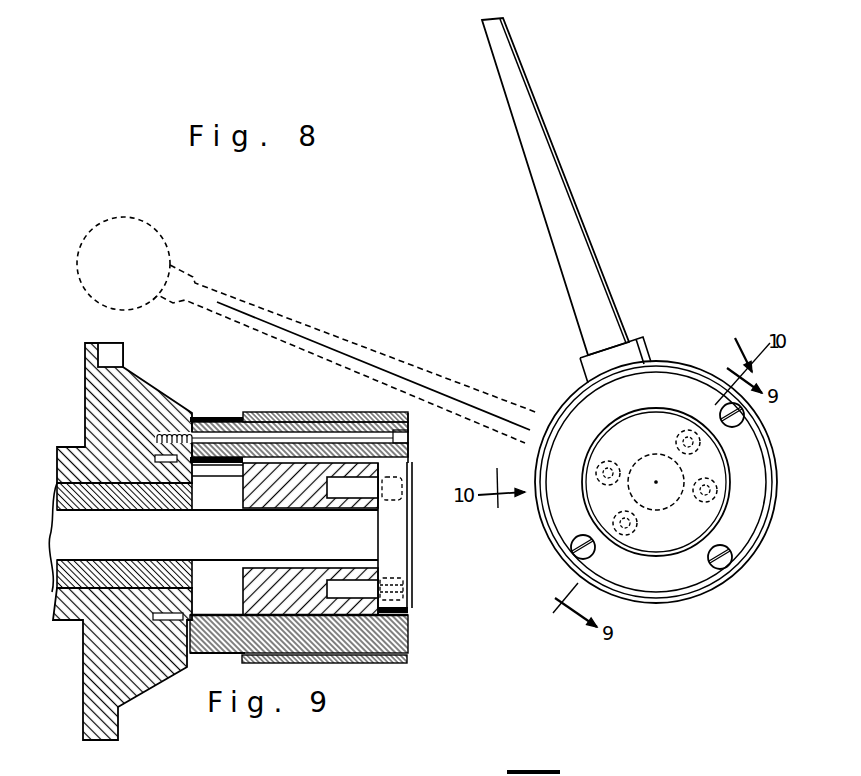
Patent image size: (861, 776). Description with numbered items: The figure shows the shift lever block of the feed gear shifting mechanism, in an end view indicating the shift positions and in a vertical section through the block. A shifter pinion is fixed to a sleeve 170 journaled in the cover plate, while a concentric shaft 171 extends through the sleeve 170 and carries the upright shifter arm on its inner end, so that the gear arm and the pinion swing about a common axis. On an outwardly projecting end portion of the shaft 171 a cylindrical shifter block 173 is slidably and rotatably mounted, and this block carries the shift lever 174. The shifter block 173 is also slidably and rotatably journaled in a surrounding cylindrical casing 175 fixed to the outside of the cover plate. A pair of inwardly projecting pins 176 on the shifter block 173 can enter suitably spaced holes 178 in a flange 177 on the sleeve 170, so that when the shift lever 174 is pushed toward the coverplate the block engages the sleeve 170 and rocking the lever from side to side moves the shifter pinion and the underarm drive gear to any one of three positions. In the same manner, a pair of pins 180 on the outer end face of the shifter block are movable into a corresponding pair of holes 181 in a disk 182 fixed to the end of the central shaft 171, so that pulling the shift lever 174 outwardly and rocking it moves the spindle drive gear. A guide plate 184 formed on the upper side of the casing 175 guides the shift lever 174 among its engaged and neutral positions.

In FIG. 9, the sleeve 170 is at (93, 506).
In FIG. 9, the shaft 171 is at (226, 520).
In FIG. 9, the shifter block 173 is at (248, 584).
In FIG. 8, the shift lever 174 is at (573, 216).
In FIG. 9, the casing 175 is at (318, 425).
In FIG. 8, the casing 175 is at (692, 580).
In FIG. 8, the pins 176 is at (598, 469).
In FIG. 9, the flange 177 is at (183, 484).
In FIG. 8, the holes 178 is at (600, 478).
In FIG. 9, the pins 180 is at (353, 493).
In FIG. 8, the pins 180 is at (685, 441).
In FIG. 9, the holes 181 is at (402, 481).
In FIG. 8, the holes 181 is at (682, 438).
In FIG. 9, the disk 182 is at (402, 537).
In FIG. 9, the guide plate 184 is at (272, 412).
In FIG. 8, the guide plate 184 is at (685, 378).